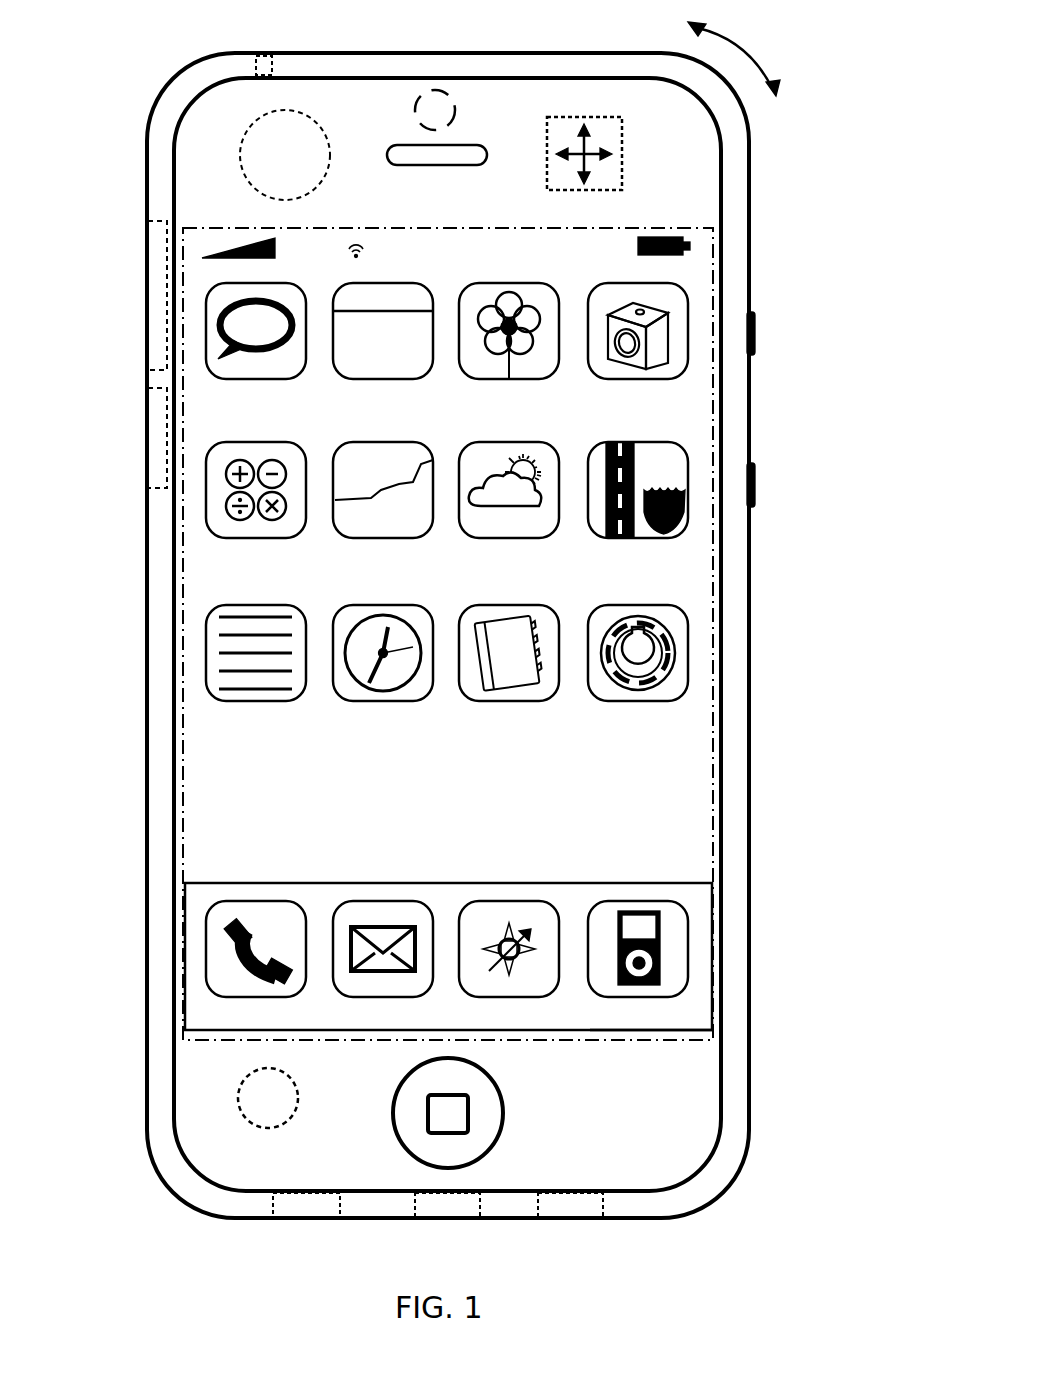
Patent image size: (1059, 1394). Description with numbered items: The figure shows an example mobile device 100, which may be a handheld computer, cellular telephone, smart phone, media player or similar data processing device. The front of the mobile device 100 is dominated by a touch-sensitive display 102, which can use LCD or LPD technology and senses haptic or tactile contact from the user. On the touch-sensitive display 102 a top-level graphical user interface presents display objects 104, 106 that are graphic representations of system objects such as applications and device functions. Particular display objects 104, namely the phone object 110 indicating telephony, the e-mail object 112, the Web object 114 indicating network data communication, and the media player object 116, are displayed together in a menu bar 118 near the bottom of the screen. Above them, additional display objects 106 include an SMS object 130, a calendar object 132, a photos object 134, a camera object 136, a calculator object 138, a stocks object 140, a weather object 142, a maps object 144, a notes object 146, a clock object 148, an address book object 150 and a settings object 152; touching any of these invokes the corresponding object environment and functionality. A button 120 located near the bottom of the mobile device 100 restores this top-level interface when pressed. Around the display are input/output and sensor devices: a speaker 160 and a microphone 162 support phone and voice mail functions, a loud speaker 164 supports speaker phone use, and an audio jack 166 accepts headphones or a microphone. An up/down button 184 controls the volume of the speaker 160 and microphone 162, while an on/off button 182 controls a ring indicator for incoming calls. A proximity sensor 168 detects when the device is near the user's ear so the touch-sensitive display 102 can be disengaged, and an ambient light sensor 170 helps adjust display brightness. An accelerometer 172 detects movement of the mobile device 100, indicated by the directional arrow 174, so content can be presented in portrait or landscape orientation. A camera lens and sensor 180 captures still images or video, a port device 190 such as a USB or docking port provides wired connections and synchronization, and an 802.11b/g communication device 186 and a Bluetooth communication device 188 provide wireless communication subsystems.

The mobile device 100 is at (533, 53).
The touch-sensitive display 102 is at (647, 226).
The display objects 104 is at (704, 898).
The display objects 106 is at (700, 279).
The phone object 110 is at (258, 901).
The e-mail object 112 is at (385, 901).
The Web object 114 is at (513, 901).
The media player object 116 is at (641, 901).
The menu bar 118 is at (598, 1032).
The button 120 is at (503, 1112).
The SMS object 130 is at (299, 380).
The calendar object 132 is at (426, 380).
The photos object 134 is at (552, 380).
The camera object 136 is at (681, 380).
The calculator object 138 is at (299, 539).
The stocks object 140 is at (426, 539).
The weather object 142 is at (552, 539).
The maps object 144 is at (681, 539).
The notes object 146 is at (299, 702).
The clock object 148 is at (426, 702).
The address book object 150 is at (552, 702).
The settings object 152 is at (681, 702).
The speaker 160 is at (410, 165).
The microphone 162 is at (340, 1205).
The loud speaker 164 is at (603, 1205).
The audio jack 166 is at (270, 66).
The proximity sensor 168 is at (242, 158).
The ambient light sensor 170 is at (284, 1122).
The accelerometer 172 is at (622, 160).
The directional arrow 174 is at (758, 52).
The camera lens and sensor 180 is at (455, 110).
The on/off button 182 is at (755, 335).
The up/down button 184 is at (755, 487).
The 802.11b/g communication device 186 is at (152, 222).
The Bluetooth communication device 188 is at (152, 388).
The port device 190 is at (480, 1200).